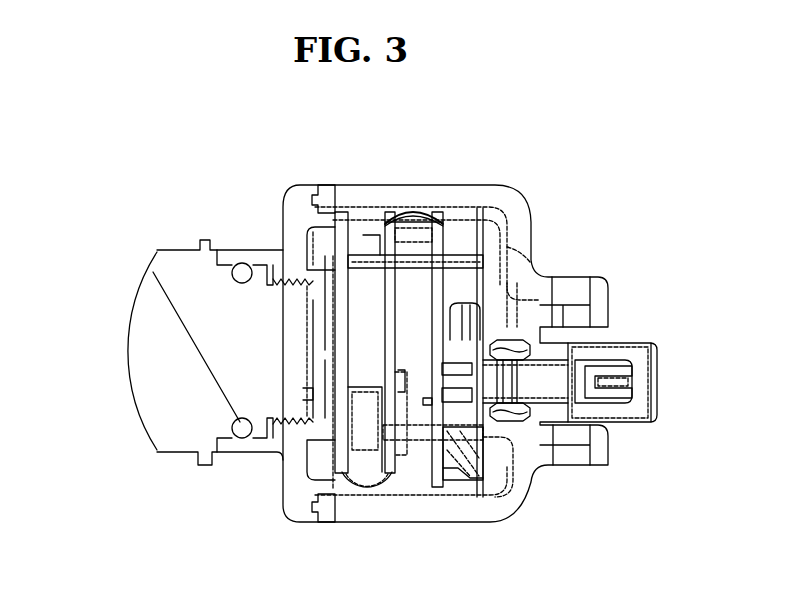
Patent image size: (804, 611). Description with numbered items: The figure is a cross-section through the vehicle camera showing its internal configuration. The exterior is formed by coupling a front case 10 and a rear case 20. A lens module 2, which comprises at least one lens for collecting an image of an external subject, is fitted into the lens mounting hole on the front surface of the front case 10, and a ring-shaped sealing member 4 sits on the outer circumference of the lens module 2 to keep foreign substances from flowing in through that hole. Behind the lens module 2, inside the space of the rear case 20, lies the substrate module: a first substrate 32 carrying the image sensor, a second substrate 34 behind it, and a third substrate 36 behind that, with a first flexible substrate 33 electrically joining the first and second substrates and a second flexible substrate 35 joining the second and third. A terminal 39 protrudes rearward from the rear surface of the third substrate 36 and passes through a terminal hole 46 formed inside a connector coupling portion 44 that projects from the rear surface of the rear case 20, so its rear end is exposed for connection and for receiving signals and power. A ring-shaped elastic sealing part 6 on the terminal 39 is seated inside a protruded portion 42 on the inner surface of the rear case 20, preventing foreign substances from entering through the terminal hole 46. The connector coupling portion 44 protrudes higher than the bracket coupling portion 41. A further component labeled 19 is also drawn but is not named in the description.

The lens module 2 is at (163, 353).
The sealing member 4 is at (243, 270).
The sealing part 6 is at (513, 415).
The front case 10 is at (283, 205).
The cap 19 is at (327, 185).
The rear case 20 is at (463, 186).
The first substrate 32 is at (333, 470).
The first flexible substrate 33 is at (368, 487).
The second substrate 34 is at (388, 470).
The second flexible substrate 35 is at (413, 213).
The third substrate 36 is at (437, 473).
The terminal 39 is at (553, 383).
The bracket coupling portion 41 is at (507, 247).
The protruded portion 42 is at (505, 336).
The connector coupling portion 44 is at (643, 426).
The terminal hole 46 is at (651, 385).